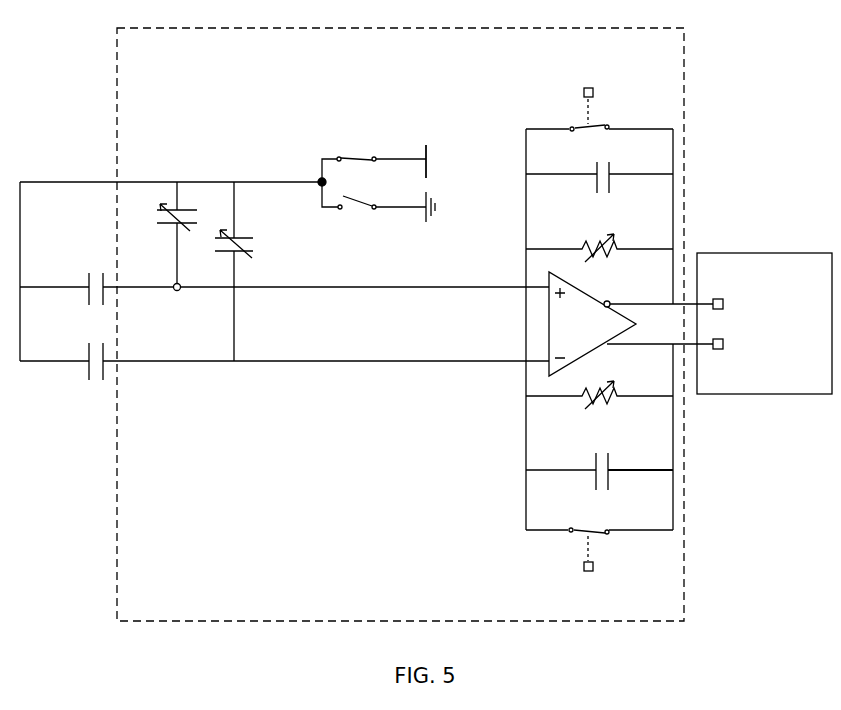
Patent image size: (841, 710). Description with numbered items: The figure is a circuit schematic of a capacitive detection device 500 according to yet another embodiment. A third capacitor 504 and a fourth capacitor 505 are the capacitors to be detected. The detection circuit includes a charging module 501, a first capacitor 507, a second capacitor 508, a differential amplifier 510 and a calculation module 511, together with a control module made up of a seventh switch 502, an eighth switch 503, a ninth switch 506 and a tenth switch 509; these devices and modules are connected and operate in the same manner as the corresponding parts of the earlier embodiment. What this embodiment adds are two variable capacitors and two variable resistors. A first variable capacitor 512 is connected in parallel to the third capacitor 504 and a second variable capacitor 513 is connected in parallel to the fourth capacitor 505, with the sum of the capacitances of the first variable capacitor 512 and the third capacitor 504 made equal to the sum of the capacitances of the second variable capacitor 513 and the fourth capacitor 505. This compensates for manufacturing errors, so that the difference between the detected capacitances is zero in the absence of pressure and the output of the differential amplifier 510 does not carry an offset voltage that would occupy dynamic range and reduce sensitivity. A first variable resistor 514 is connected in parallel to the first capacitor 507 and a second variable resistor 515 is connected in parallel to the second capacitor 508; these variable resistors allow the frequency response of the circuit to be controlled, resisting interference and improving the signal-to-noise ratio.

The sensing circuit 500 is at (400, 324).
The charging module 501 is at (451, 161).
The seventh switch 502 is at (374, 154).
The eighth switch 503 is at (378, 212).
The third capacitor 504 is at (90, 277).
The fourth capacitor 505 is at (90, 376).
The ninth switch 506 is at (599, 95).
The first capacitor 507 is at (599, 167).
The second capacitor 508 is at (599, 482).
The tenth switch 509 is at (599, 569).
The differential amplifier 510 is at (569, 324).
The calculation module 511 is at (764, 323).
The first variable capacitor 512 is at (158, 233).
The second variable capacitor 513 is at (251, 271).
The first variable resistor 514 is at (599, 239).
The second variable resistor 515 is at (599, 404).